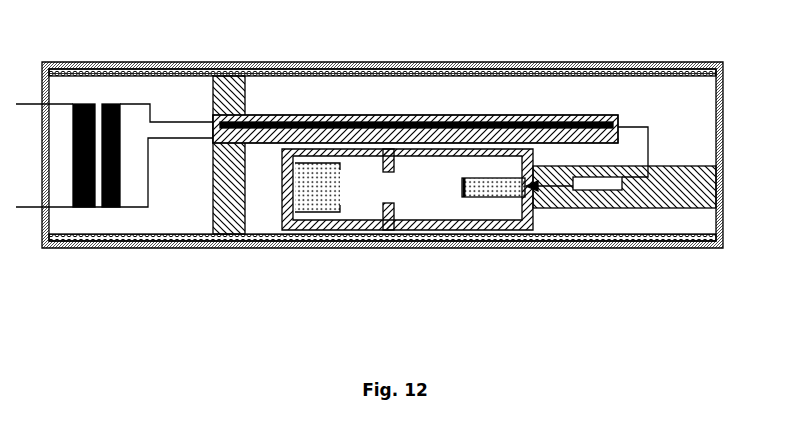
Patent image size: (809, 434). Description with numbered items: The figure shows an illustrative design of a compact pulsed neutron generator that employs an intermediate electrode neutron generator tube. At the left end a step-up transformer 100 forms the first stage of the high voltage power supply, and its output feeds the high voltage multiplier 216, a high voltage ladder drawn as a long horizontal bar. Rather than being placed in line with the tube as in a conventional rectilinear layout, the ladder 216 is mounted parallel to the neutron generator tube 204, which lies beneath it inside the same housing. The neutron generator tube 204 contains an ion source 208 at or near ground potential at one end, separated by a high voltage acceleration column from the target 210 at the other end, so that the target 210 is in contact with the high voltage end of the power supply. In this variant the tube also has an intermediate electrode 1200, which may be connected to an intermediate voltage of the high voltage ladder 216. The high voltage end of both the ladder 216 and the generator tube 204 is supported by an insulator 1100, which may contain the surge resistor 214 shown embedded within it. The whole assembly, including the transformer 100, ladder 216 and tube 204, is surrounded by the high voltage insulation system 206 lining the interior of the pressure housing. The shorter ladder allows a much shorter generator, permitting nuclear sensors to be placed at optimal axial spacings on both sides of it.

The step-up transformer 100 is at (93, 105).
The high voltage insulation system 206 is at (283, 90).
The high voltage multiplier 216 is at (415, 115).
The surge resistor 214 is at (600, 182).
The neutron generator tube 204 is at (422, 208).
The ion source 208 is at (320, 195).
The target 210 is at (467, 195).
The insulator 1100 is at (693, 200).
The intermediate electrode 1200 is at (390, 203).